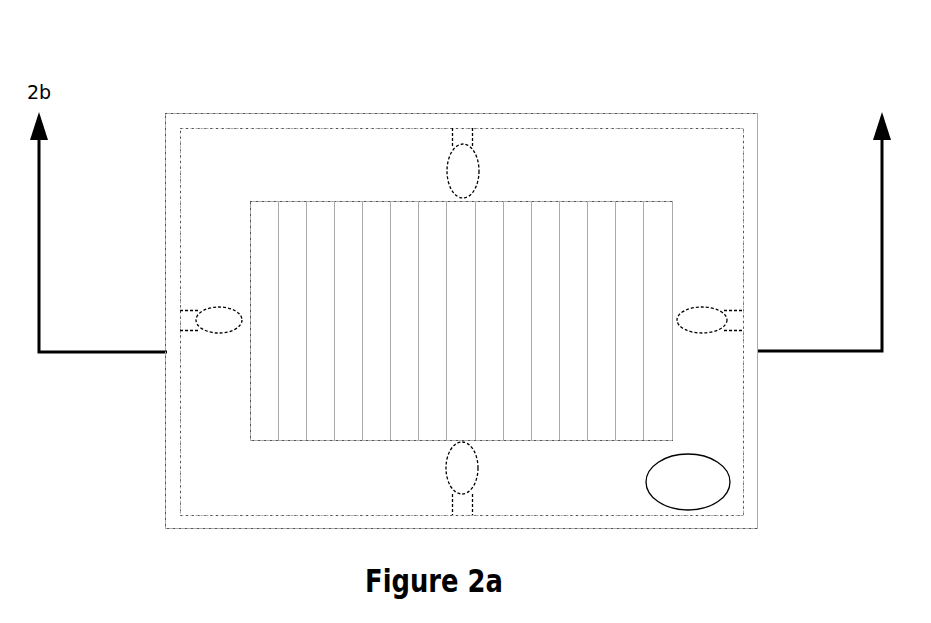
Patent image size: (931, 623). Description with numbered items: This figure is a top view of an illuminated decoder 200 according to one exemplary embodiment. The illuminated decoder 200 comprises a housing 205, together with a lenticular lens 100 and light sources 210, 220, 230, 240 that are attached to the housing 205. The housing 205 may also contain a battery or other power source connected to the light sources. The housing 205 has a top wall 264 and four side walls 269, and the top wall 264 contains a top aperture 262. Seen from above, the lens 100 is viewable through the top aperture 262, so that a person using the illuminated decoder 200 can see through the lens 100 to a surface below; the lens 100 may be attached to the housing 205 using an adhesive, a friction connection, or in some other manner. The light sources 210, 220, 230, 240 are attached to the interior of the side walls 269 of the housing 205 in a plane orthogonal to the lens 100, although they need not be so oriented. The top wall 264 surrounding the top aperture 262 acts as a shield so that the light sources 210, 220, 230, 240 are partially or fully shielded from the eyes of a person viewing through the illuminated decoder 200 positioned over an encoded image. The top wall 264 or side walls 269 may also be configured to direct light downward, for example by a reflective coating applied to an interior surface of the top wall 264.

The lenticular lens 100 is at (340, 232).
The illuminated decoder 200 is at (594, 54).
The housing 205 is at (278, 113).
The light source 210 is at (470, 147).
The light source 220 is at (725, 310).
The light source 230 is at (477, 468).
The light source 240 is at (221, 308).
The top aperture 262 is at (672, 227).
The top wall 264 is at (687, 155).
The side walls 269 is at (758, 390).